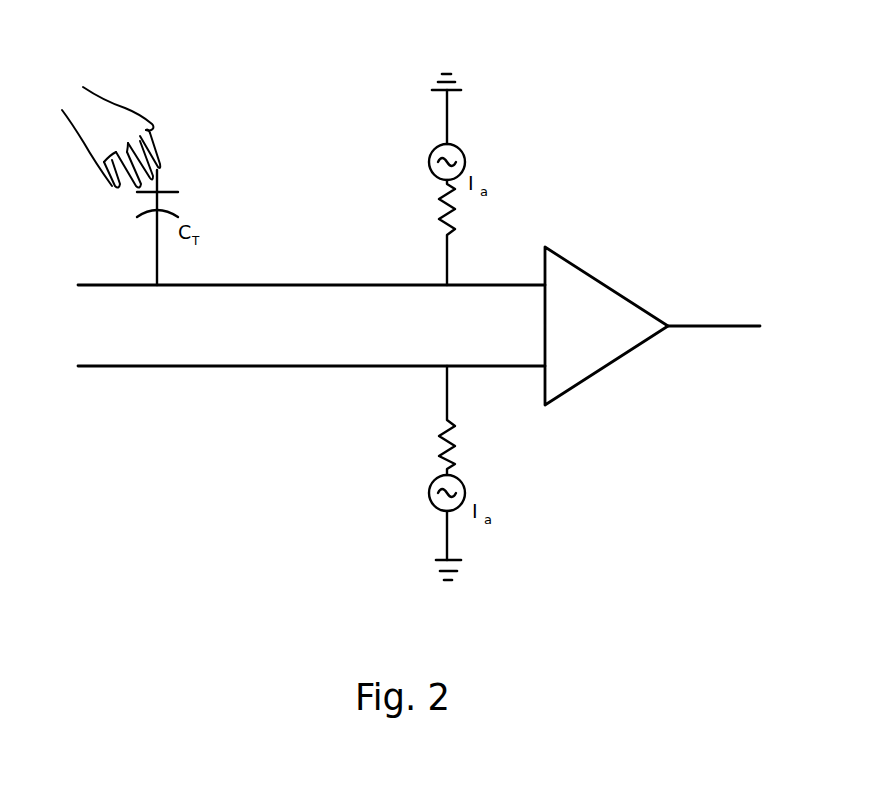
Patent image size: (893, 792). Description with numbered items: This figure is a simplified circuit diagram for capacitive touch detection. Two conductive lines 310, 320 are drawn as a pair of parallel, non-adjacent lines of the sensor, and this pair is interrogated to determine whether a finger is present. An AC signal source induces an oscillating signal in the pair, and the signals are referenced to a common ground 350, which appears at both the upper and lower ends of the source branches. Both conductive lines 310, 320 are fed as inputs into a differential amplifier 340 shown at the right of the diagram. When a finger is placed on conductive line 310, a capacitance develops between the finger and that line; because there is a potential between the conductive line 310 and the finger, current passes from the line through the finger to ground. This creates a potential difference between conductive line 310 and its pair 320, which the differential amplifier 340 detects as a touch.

The conductive line 310 is at (92, 288).
The conductive line 320 is at (112, 368).
The differential amplifier 340 is at (593, 373).
The common ground 350 is at (460, 80).